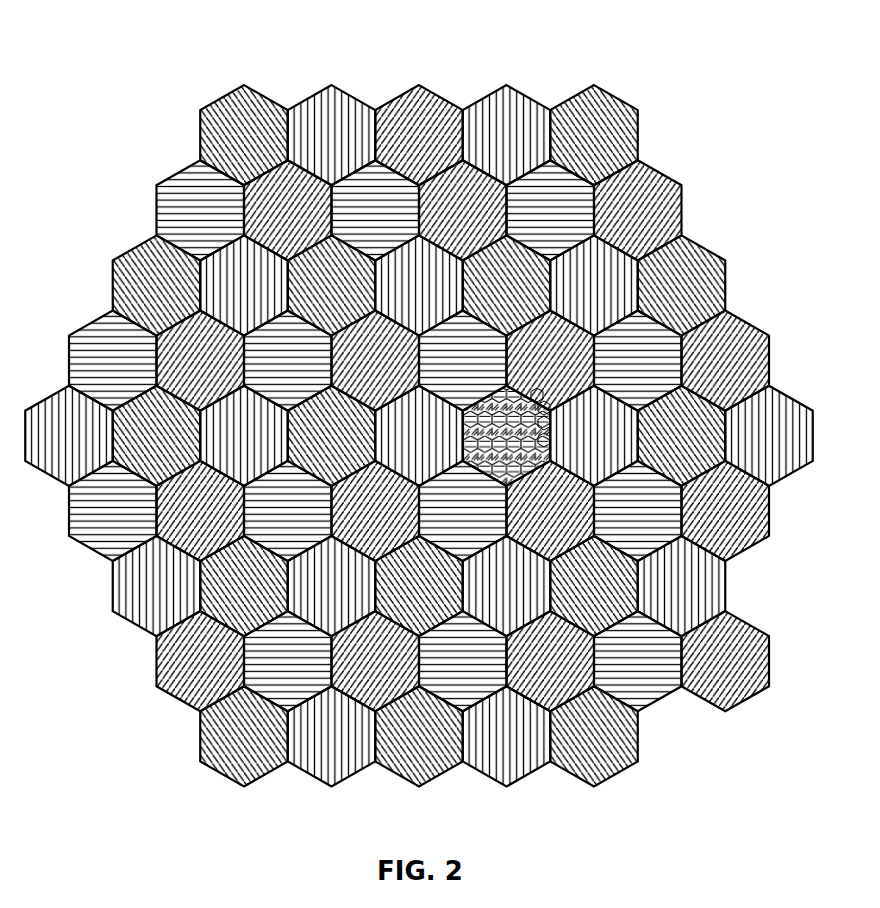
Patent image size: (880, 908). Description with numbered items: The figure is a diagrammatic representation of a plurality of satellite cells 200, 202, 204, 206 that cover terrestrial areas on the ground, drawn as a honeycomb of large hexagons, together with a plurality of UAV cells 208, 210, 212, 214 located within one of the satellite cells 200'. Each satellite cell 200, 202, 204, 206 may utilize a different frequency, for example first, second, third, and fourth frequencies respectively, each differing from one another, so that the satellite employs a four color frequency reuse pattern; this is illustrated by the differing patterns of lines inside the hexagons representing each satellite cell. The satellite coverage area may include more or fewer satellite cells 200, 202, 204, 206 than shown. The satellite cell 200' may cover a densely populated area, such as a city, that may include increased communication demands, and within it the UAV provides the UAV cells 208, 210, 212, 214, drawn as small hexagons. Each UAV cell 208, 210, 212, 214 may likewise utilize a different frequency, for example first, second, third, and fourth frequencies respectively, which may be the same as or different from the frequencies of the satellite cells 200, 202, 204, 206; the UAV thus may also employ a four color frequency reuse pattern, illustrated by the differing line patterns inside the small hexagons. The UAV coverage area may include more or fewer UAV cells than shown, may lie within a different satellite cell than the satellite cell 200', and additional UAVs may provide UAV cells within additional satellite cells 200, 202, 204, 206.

The satellite cell 200 is at (426, 109).
The satellite cell 200' is at (606, 321).
The satellite cell 202 is at (353, 93).
The satellite cell 204 is at (180, 170).
The satellite cell 206 is at (277, 173).
The UAV cell 208 is at (555, 407).
The UAV cell 210 is at (553, 423).
The UAV cell 212 is at (540, 388).
The UAV cell 214 is at (550, 440).